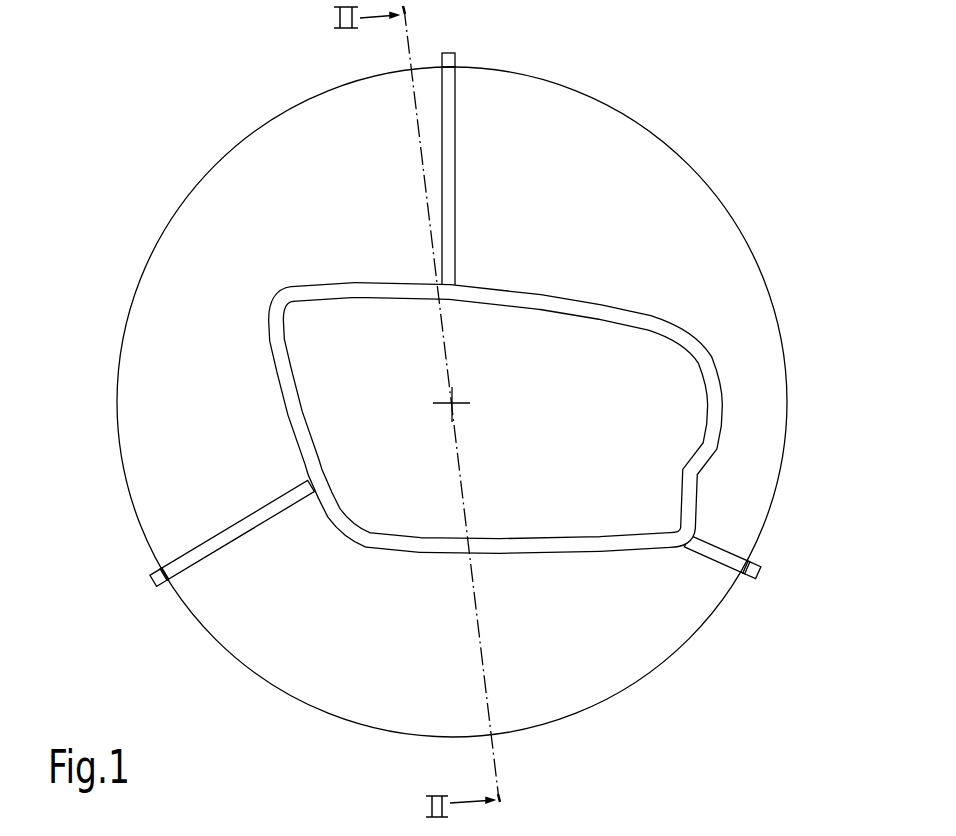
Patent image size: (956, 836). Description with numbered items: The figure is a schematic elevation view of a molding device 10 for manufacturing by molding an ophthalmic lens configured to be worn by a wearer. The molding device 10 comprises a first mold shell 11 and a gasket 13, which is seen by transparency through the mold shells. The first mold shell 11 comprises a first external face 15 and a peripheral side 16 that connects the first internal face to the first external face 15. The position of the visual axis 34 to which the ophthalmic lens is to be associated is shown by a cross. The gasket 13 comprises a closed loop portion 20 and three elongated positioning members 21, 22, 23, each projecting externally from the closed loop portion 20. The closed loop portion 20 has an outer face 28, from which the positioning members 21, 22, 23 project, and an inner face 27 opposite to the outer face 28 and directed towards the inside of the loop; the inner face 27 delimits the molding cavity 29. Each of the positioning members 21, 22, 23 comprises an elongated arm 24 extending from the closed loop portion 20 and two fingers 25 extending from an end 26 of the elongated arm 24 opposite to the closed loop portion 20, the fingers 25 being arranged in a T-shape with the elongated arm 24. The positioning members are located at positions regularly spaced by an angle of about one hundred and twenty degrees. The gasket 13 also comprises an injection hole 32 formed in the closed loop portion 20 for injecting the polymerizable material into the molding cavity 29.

The molding device 10 is at (454, 408).
The first mold shell 11 is at (429, 400).
The gasket 13 is at (454, 338).
The first external face 15 is at (429, 400).
The peripheral side 16 is at (646, 110).
The closed loop portion 20 is at (518, 372).
The positioning member 21 is at (455, 138).
The positioning member 22 is at (755, 577).
The positioning member 23 is at (223, 548).
The elongated arm 24 is at (503, 363).
The finger 25 is at (448, 53).
The end 26 is at (454, 339).
The inner face 27 is at (556, 392).
The outer face 28 is at (556, 372).
The molding cavity 29 is at (556, 392).
The injection hole 32 is at (700, 350).
The visual axis 34 is at (456, 403).